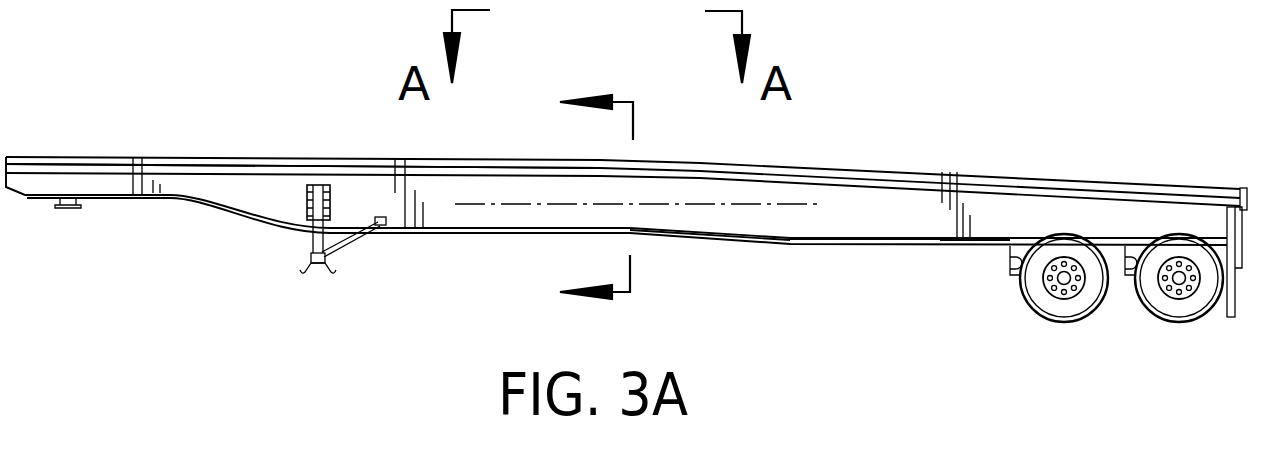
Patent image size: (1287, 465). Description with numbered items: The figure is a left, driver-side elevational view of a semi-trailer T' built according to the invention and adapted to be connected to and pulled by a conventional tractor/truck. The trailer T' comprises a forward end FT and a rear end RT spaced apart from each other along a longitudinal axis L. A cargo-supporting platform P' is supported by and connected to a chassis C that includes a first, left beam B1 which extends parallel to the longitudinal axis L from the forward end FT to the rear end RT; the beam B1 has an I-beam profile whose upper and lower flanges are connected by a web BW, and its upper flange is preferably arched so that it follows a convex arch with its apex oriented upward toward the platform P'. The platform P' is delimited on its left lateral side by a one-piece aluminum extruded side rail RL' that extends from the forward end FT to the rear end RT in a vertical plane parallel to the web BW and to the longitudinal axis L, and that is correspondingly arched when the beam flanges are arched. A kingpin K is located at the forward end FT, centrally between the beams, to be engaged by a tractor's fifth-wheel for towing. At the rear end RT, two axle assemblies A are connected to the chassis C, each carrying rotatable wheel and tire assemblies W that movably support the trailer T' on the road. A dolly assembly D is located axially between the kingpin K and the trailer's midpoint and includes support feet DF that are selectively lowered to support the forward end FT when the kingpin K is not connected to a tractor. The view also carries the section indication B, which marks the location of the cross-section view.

The forward end FT is at (53, 152).
The cargo-supporting platform P' is at (318, 147).
The semi-trailer T' is at (623, 142).
The rear end RT is at (1172, 180).
The kingpin K is at (68, 210).
The left side rail RL' is at (303, 203).
The dolly assembly D is at (334, 263).
The support feet DF is at (318, 272).
The longitudinal axis L is at (588, 205).
The web BW is at (823, 225).
The first beam B1 is at (885, 218).
The chassis C is at (945, 255).
The axle assembly A is at (1068, 326).
The wheel and tire assembly W is at (1040, 313).
The section line B- B is at (588, 199).